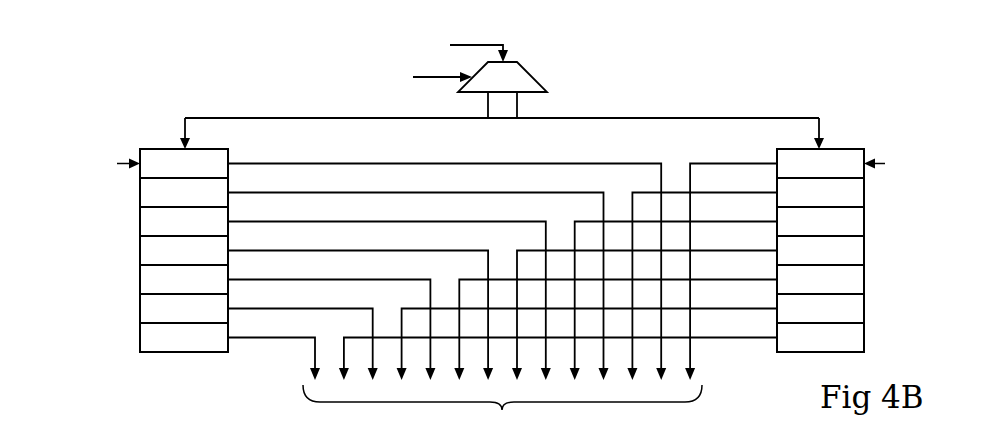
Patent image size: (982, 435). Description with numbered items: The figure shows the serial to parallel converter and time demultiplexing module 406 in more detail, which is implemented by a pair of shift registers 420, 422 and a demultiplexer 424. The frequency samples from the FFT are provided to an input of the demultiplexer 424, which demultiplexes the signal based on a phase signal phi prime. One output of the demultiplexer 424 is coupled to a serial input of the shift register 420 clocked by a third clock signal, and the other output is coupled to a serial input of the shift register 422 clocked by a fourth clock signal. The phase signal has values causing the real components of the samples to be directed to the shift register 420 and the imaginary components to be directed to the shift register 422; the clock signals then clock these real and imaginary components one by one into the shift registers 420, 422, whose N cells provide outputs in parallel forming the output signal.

The serial to parallel converter and time demultiplexing module 406 is at (800, 90).
The shift register 420 is at (134, 222).
The shift register 422 is at (870, 222).
The demultiplexer 424 is at (520, 76).